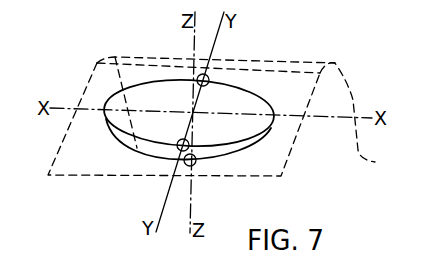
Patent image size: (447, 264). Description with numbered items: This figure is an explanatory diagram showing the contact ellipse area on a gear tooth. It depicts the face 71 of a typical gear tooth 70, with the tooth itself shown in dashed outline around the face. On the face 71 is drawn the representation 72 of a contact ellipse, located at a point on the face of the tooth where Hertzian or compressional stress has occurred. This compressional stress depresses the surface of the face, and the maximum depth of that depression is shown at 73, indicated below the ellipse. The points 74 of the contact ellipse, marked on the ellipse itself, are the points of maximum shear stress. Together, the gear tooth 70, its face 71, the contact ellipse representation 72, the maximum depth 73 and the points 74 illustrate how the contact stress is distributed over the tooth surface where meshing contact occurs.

The gear tooth 70 is at (356, 98).
The face 71 is at (274, 170).
The representation of a contact ellipse 72 is at (153, 149).
The maximum depth 73 is at (194, 165).
The points of maximum shear stress 74 is at (186, 141).